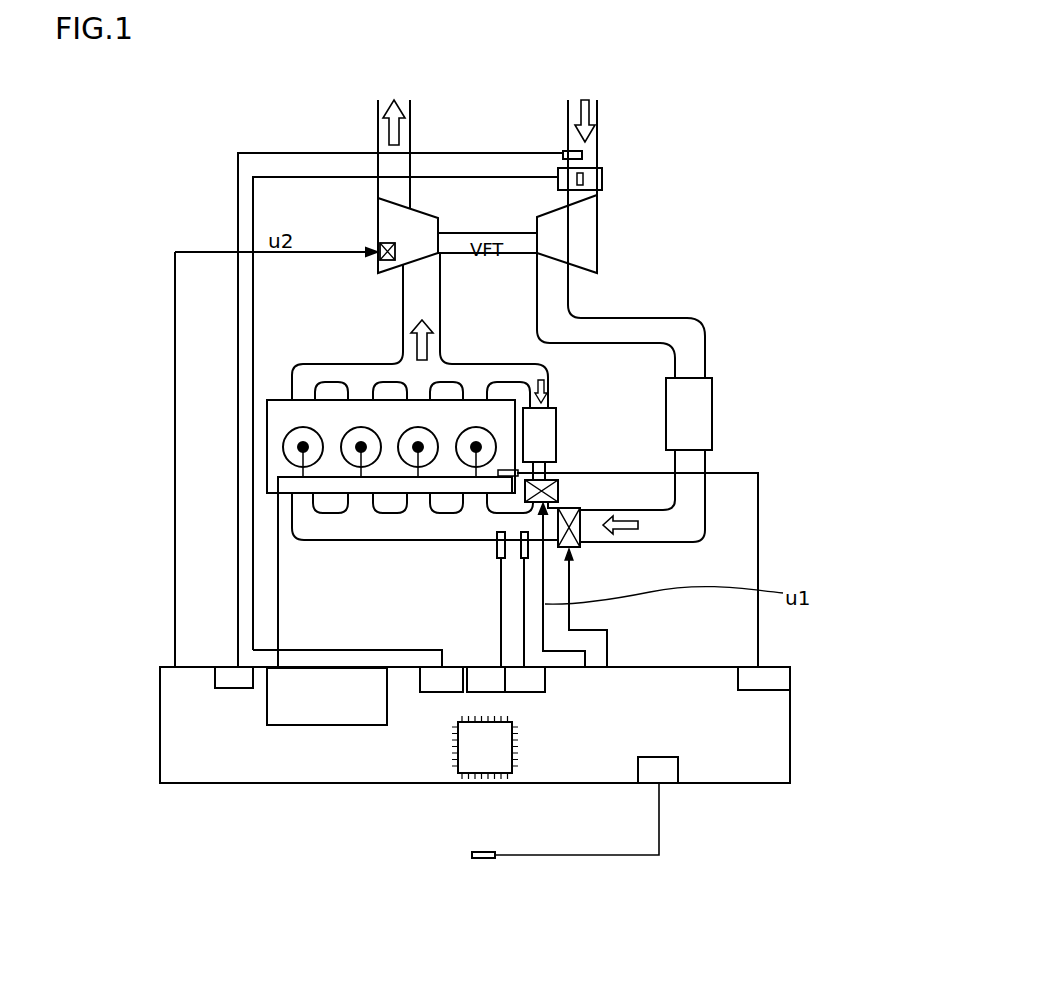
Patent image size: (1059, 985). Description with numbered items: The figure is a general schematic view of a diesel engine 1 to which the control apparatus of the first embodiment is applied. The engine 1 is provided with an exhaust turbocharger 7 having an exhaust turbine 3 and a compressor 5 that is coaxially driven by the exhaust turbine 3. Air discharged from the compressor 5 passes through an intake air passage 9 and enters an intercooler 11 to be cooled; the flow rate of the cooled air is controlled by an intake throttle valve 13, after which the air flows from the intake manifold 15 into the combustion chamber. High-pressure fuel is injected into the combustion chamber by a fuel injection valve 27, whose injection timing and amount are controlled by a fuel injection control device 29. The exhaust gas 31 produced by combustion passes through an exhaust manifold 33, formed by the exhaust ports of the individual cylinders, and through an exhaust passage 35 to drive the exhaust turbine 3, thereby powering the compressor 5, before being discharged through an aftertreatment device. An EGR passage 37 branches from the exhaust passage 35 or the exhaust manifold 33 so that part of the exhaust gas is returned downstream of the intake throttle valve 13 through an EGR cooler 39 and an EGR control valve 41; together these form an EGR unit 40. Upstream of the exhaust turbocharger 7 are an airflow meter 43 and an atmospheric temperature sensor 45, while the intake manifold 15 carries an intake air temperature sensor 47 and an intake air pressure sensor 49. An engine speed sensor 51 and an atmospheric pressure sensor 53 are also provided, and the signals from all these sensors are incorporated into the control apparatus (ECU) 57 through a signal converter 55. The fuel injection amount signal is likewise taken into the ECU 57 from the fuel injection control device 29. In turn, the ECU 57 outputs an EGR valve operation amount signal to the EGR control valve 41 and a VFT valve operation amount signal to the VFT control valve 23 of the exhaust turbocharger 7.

The diesel engine 1 is at (705, 291).
The exhaust turbine 3 is at (378, 206).
The compressor 5 is at (597, 213).
The exhaust turbocharger 7 is at (612, 255).
The intake air passage 9 is at (706, 338).
The intercooler 11 is at (712, 407).
The intake throttle valve 13 is at (573, 552).
The intake manifold 15 is at (330, 541).
The VFT control valve 23 is at (383, 243).
The fuel injection valve 27 is at (290, 447).
The fuel injection control device 29 is at (330, 727).
The exhaust gas 31 is at (436, 348).
The exhaust manifold 33 is at (325, 364).
The exhaust passage 35 is at (403, 300).
The EGR passage 37 is at (548, 378).
The EGR cooler 39 is at (558, 416).
The EGR unit 40 is at (590, 421).
The EGR control valve 41 is at (560, 488).
The airflow meter 43 is at (602, 178).
The atmospheric temperature sensor 45 is at (582, 153).
The intake air temperature sensor 47 is at (497, 550).
The intake air pressure sensor 49 is at (521, 555).
The engine speed sensor 51 is at (557, 470).
The atmospheric pressure sensor 53 is at (482, 852).
The signal converter 55 is at (228, 675).
The control apparatus (ECU) 57 is at (791, 712).